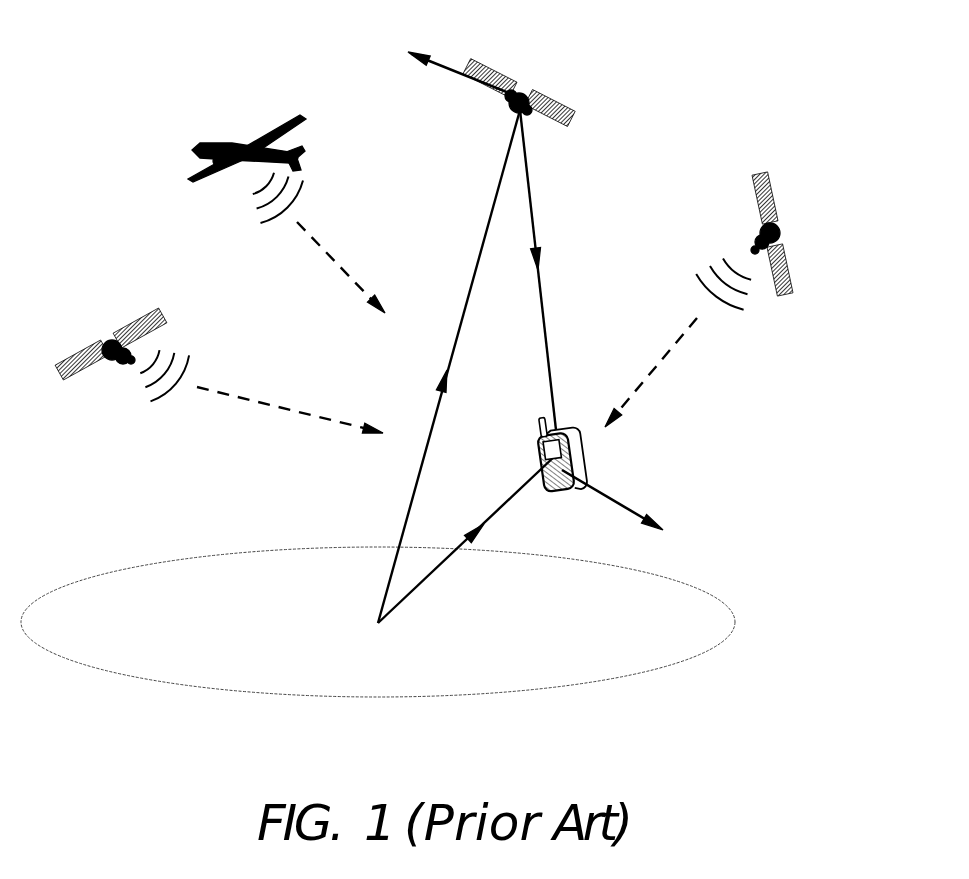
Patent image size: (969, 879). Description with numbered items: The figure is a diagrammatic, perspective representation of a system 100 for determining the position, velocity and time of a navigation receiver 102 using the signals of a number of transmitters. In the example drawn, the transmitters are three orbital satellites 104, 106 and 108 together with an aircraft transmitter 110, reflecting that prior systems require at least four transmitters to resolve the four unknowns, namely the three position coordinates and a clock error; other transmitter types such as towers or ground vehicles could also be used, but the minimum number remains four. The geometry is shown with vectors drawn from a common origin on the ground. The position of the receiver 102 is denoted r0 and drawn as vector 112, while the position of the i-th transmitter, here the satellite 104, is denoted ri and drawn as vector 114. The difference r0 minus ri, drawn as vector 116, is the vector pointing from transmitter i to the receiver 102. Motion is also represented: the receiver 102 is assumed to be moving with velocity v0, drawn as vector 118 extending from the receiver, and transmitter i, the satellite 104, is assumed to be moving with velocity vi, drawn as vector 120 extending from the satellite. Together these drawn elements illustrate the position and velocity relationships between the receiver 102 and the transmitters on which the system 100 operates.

The system 100 is at (420, 755).
The navigation receiver 102 is at (580, 458).
The orbital satellite 104 is at (547, 106).
The orbital satellite 106 is at (767, 183).
The orbital satellite 108 is at (139, 323).
The aircraft transmitter 110 is at (219, 140).
The vector r0 112 is at (440, 562).
The vector ri 114 is at (473, 268).
The vector r0 - ri 116 is at (548, 352).
The vector v0 118 is at (610, 503).
The vector vi 120 is at (438, 59).